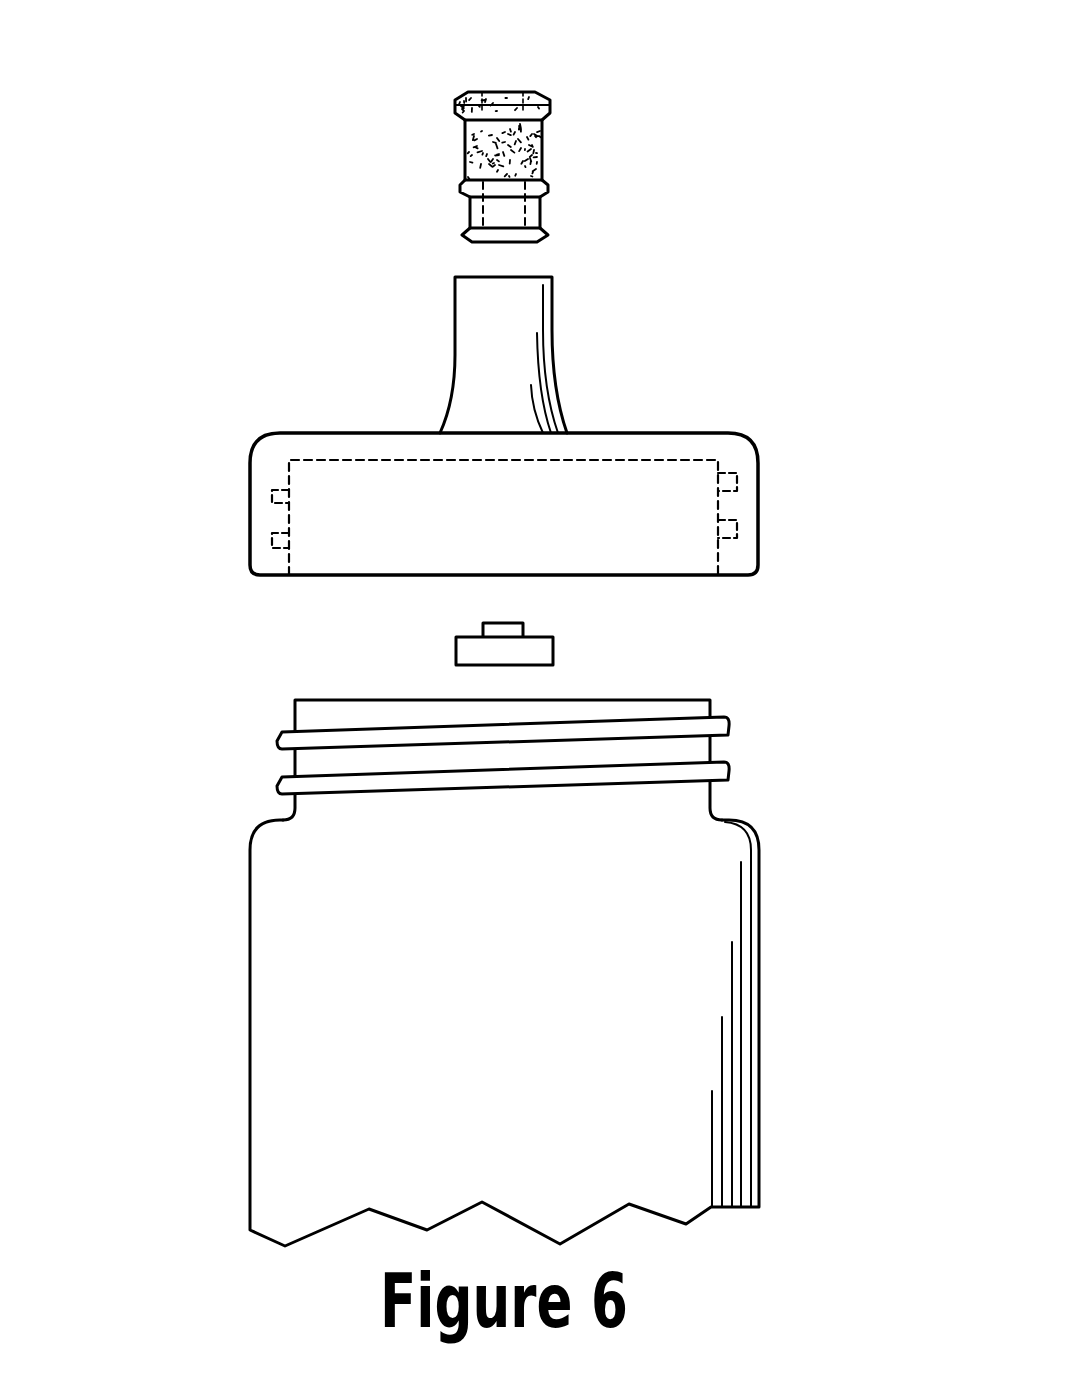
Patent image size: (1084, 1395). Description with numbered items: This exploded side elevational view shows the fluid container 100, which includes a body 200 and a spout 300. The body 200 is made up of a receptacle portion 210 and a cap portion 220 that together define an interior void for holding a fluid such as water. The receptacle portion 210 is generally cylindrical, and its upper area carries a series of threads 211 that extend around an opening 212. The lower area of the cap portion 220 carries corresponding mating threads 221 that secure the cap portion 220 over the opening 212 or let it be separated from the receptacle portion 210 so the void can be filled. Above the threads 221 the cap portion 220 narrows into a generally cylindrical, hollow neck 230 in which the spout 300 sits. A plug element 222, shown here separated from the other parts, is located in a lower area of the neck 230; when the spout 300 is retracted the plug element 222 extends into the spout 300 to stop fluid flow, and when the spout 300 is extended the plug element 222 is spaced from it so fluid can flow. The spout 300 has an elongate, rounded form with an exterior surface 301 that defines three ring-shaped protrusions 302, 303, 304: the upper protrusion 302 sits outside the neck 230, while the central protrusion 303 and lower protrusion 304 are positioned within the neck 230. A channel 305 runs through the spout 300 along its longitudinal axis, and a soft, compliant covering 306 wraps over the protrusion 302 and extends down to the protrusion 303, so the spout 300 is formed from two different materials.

The fluid container 100 is at (185, 382).
The body 200 is at (240, 955).
The receptacle portion 210 is at (761, 996).
The threads 211 is at (732, 769).
The opening 212 is at (367, 700).
The cap portion 220 is at (560, 504).
The mating threads 221 is at (293, 494).
The plug element 222 is at (555, 649).
The neck 230 is at (557, 354).
The spout 300 is at (458, 86).
The exterior surface 301 is at (491, 138).
The protrusion 302 is at (560, 67).
The protrusion 303 is at (551, 187).
The protrusion 304 is at (462, 232).
The channel 305 is at (495, 90).
The covering 306 is at (460, 152).